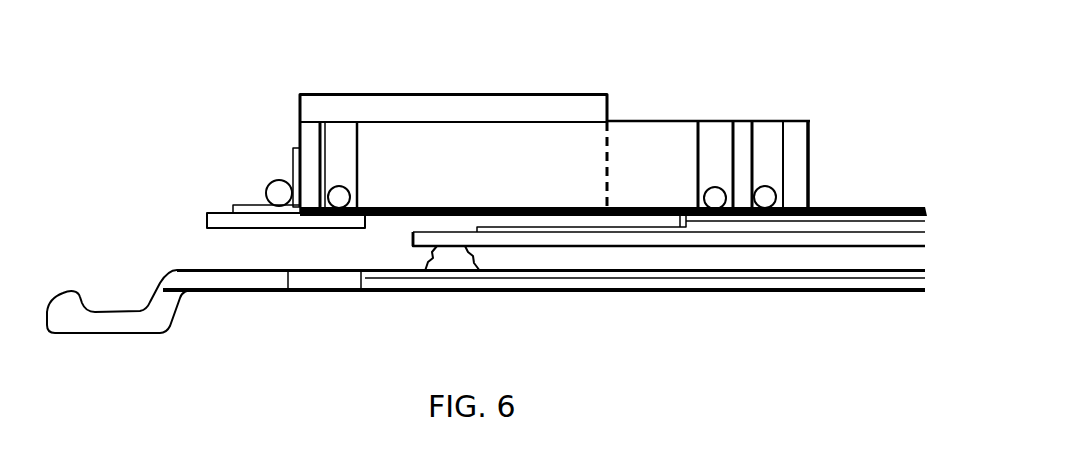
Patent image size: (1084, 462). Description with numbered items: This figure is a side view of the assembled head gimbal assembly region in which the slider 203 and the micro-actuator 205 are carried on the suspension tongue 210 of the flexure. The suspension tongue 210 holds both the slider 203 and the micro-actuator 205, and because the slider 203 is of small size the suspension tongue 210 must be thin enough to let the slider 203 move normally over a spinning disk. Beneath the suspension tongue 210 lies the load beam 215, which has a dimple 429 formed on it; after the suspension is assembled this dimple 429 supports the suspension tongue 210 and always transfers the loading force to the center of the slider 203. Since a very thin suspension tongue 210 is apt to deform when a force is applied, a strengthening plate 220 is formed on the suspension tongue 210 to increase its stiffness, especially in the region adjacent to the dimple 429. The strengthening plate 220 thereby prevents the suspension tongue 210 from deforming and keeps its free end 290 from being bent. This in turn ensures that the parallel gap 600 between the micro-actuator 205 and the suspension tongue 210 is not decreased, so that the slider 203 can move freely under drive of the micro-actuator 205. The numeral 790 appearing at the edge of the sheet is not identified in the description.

The slider 203 is at (431, 95).
The micro-actuator 205 is at (628, 155).
The suspension tongue 210 is at (563, 240).
The load beam 215 is at (175, 279).
The strengthening plate 220 is at (640, 230).
The free end 290 is at (425, 242).
The dimple 429 is at (460, 253).
The parallel gap 600 is at (428, 216).
The circuit board 790 is at (544, 367).